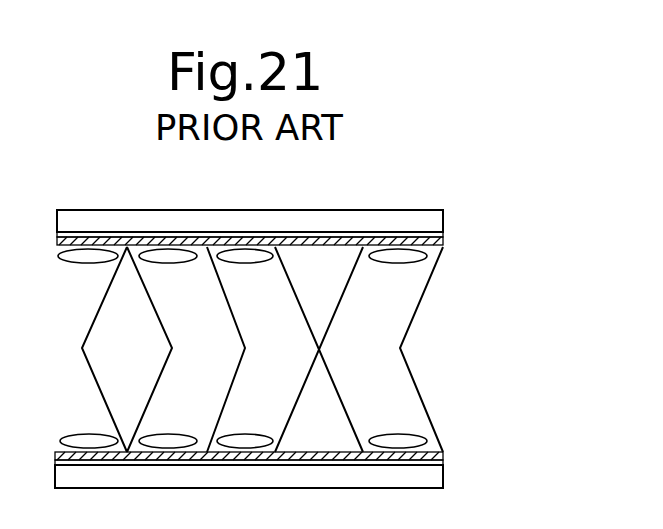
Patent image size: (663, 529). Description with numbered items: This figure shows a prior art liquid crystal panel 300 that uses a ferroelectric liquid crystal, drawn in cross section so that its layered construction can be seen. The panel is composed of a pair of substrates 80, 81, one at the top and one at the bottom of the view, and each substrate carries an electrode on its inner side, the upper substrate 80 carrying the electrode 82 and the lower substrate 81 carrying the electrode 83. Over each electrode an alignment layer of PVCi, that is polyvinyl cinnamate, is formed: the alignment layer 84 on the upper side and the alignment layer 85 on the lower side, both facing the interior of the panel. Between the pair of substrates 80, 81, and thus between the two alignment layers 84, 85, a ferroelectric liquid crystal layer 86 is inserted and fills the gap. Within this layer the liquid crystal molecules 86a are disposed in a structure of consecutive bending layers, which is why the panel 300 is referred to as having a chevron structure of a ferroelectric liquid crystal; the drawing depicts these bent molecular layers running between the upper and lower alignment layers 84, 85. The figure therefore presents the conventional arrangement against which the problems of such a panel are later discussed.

The liquid crystal panel 300 is at (347, 203).
The substrate 80 is at (443, 213).
The electrode 82 is at (443, 233).
The alignment layer 84 is at (443, 243).
The liquid crystal molecules 86a is at (426, 260).
The ferroelectric liquid crystal layer 86 is at (387, 337).
The alignment layer 85 is at (443, 452).
The electrode 83 is at (443, 464).
The substrate 81 is at (443, 487).